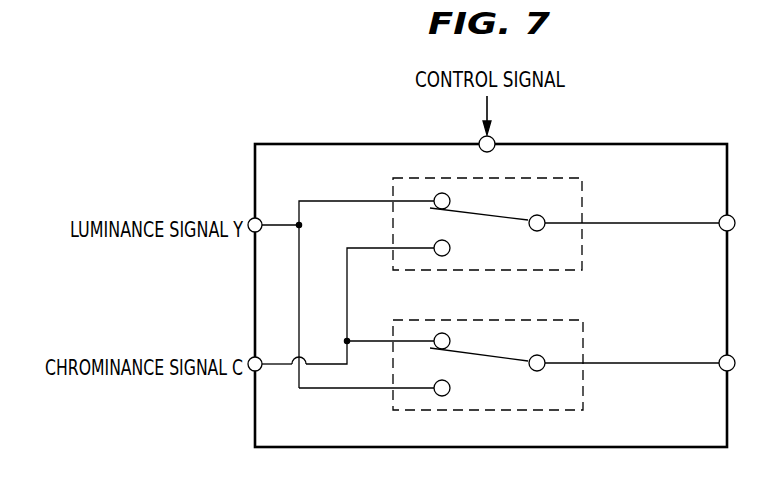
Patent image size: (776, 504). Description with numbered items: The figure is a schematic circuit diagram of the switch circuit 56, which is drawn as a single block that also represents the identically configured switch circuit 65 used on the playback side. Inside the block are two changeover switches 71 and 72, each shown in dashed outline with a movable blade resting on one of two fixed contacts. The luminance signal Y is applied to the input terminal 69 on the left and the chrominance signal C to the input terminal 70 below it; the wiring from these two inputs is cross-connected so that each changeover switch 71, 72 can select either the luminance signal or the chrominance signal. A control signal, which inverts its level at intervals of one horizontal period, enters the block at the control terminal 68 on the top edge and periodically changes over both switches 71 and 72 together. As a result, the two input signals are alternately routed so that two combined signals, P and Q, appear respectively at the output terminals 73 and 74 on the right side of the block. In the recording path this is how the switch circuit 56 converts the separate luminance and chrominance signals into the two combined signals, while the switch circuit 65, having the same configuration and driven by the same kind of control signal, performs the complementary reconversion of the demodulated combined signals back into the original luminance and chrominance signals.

The switch circuit 56 is at (491, 321).
The switch circuit 65 is at (470, 448).
The control terminal 68 is at (495, 139).
The input terminal 69 is at (247, 219).
The input terminal 70 is at (248, 358).
The changeover switch 71 is at (585, 200).
The changeover switch 72 is at (585, 340).
The output terminal 73 is at (731, 231).
The output terminal 74 is at (731, 371).